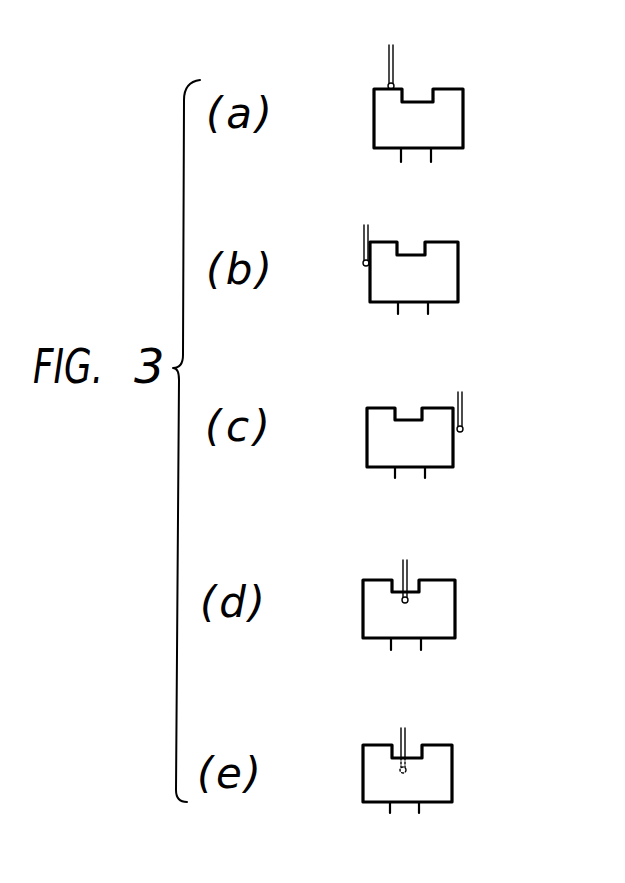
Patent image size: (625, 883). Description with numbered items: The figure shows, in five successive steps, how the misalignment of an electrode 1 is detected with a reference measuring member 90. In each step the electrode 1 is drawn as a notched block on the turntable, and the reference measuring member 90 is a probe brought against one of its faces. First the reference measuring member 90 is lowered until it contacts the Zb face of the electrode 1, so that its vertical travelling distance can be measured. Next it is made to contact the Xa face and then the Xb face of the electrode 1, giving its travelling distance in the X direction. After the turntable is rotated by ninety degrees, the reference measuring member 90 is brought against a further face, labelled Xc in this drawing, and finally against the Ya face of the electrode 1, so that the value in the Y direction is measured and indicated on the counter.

The electrode 1 is at (463, 128).
The reference measuring member 90 is at (393, 52).
The Zb face Zb is at (322, 120).
The Xa face Xa is at (322, 276).
The Xb face Xb is at (320, 437).
The contact position Xc is at (319, 604).
The Ya face Ya is at (315, 777).